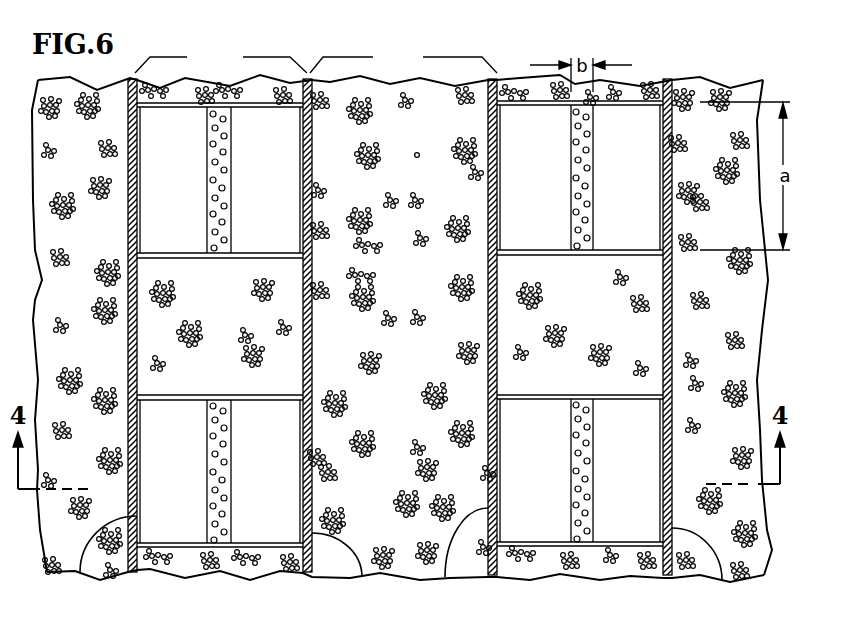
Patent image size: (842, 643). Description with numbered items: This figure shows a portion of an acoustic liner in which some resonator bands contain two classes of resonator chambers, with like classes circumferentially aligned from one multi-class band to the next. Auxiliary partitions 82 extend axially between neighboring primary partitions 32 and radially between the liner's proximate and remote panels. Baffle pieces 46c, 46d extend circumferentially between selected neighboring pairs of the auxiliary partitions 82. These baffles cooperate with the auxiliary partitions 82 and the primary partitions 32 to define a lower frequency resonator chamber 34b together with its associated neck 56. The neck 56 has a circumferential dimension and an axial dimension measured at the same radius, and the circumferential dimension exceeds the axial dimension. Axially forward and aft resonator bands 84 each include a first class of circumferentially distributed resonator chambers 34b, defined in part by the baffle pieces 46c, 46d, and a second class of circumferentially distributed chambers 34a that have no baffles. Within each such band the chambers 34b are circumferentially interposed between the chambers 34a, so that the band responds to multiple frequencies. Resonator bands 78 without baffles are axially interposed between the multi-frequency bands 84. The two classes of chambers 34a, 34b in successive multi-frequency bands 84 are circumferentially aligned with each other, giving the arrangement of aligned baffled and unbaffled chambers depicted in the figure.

The partition 32 is at (725, 593).
The resonator chamber 34a is at (745, 350).
The lower frequency resonator chamber 34b is at (645, 479).
The baffle piece 46c is at (548, 195).
The baffle piece 46d is at (640, 195).
The neck 56 is at (593, 432).
The resonator band 78 is at (403, 59).
The auxiliary partition 82 is at (558, 542).
The resonator band 84 is at (221, 59).